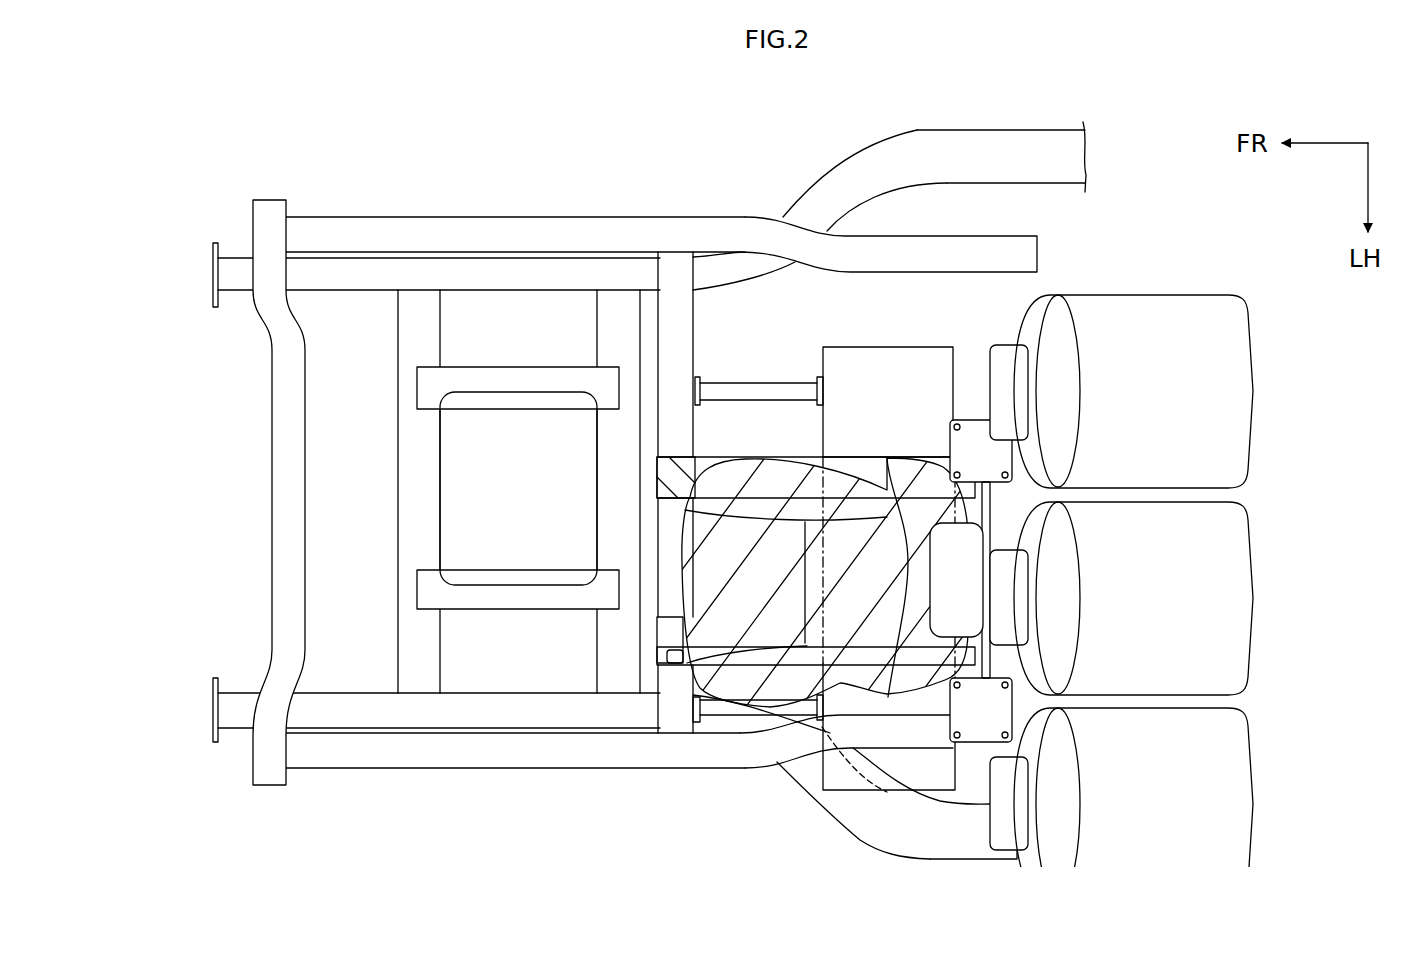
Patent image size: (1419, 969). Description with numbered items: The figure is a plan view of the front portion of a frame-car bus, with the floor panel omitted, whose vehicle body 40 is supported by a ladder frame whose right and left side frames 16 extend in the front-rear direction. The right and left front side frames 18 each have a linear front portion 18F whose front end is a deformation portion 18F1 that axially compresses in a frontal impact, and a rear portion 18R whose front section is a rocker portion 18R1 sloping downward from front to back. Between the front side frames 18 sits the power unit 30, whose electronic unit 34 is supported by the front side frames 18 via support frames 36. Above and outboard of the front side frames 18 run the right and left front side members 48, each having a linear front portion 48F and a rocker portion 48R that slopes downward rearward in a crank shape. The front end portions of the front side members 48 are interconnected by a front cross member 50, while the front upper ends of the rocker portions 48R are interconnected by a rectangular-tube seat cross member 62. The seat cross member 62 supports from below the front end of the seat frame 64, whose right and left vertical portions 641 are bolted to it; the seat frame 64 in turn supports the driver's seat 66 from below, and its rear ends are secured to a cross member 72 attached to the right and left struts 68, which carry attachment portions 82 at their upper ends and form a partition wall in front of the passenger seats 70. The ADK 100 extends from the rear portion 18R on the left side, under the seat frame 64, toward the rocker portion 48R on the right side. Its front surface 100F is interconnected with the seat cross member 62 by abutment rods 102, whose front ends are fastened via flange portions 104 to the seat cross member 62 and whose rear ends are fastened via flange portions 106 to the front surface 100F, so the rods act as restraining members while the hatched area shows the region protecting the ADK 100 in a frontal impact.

The side frame 16 is at (635, 488).
The front side frame 18 is at (635, 491).
The front portion of front side frame 18F is at (418, 275).
The deformation portion 18F1 is at (233, 258).
The rear portion of front side frame 18R is at (889, 491).
The rocker portion 18R1 is at (800, 235).
The power unit 30 is at (454, 488).
The electronic unit 34 is at (440, 510).
The support frame 36 is at (597, 332).
The vehicle body 40 is at (635, 491).
The front side member 48 is at (661, 495).
The front portion of front side member 48F is at (528, 217).
The rear portion of front side member 48R is at (803, 208).
The front cross member 50 is at (272, 477).
The seat cross member 62 is at (693, 313).
The seat frame 64 is at (556, 523).
The vertical portion 641 is at (657, 473).
The driver's seat 66 is at (778, 457).
The strut 68 is at (1012, 460).
The passenger seat 70 is at (1255, 398).
The cross member 72 is at (990, 520).
The attachment portion 82 is at (1067, 581).
The ADK 100 is at (839, 539).
The front surface of ADK 100F is at (820, 568).
The abutment rod 102 is at (775, 383).
The flange portion 104 is at (697, 377).
The flange portion 106 is at (819, 377).